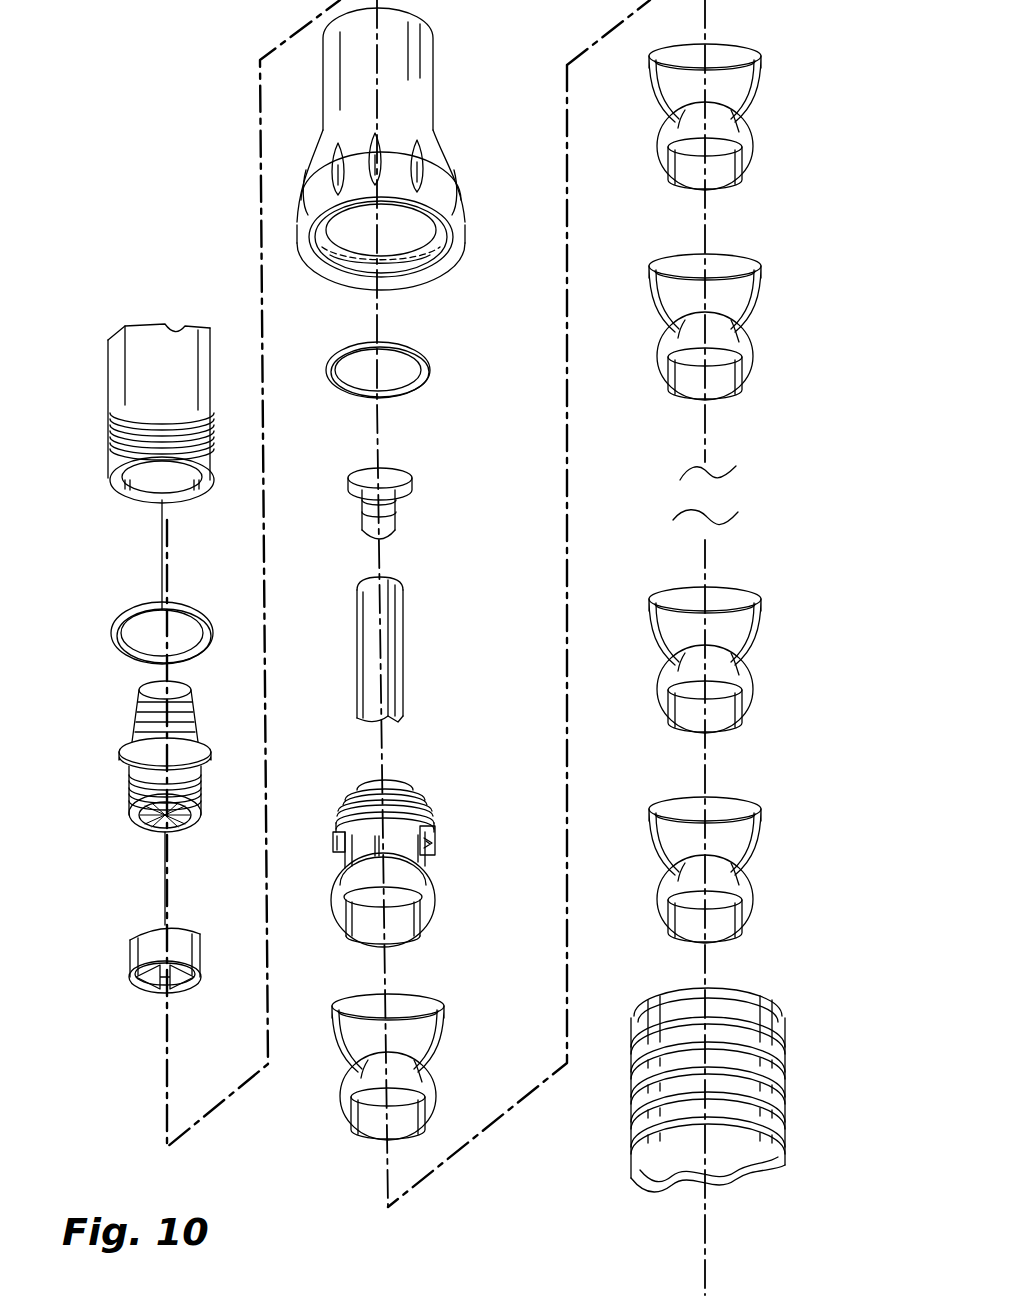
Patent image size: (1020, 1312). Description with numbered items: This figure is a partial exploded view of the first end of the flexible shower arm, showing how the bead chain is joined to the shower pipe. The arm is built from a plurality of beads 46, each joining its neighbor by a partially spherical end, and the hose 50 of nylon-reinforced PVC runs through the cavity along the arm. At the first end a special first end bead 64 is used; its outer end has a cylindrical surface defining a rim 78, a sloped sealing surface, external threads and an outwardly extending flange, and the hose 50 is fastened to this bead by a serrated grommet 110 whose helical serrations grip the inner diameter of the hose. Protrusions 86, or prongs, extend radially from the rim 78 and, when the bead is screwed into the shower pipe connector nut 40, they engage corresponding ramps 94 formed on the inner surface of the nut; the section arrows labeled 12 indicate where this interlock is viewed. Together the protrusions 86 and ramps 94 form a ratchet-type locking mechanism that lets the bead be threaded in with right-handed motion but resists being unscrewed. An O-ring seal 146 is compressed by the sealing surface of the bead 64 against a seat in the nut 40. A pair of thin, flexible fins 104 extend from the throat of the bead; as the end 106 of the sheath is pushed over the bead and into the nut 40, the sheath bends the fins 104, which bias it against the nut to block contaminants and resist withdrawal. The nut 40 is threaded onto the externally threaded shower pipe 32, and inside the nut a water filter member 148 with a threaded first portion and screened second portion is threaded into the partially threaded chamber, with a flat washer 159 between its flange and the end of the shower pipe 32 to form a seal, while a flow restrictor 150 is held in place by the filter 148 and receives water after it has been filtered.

The shower pipe connector nut 40 is at (420, 68).
The section line indicator 12 is at (457, 125).
The ramps 94 is at (385, 256).
The O-ring seal 146 is at (420, 384).
The serrated grommet 110 is at (408, 474).
The hose 50 is at (404, 652).
The rim 78 is at (412, 796).
The protrusions 86 is at (333, 840).
The fins 104 is at (433, 847).
The first end bead 64 is at (436, 905).
The beads 46 is at (440, 1055).
The end of the sheath 106 is at (782, 1062).
The shower pipe 32 is at (133, 378).
The flat washer 159 is at (118, 636).
The water filter member 148 is at (128, 767).
The flow restrictor 150 is at (130, 955).